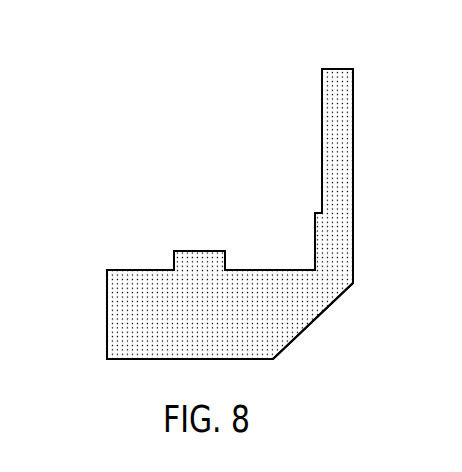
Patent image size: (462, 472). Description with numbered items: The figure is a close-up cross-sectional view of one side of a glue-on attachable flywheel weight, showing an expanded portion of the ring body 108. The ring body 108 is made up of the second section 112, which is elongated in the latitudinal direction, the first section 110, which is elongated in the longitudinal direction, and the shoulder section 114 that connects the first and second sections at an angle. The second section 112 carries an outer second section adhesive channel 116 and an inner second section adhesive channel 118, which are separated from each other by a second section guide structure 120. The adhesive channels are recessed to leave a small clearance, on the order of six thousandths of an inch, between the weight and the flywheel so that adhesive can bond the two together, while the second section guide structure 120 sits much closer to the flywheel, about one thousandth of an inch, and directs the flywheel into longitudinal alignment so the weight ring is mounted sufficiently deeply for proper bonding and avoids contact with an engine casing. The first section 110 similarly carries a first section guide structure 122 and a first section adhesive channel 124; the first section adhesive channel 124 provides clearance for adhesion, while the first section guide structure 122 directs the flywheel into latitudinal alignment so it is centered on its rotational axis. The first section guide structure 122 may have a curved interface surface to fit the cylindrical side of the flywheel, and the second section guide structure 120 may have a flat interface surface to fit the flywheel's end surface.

The ring body 108 is at (338, 69).
The first section 110 is at (353, 131).
The first section adhesive channel 124 is at (322, 130).
The first section guide structure 122 is at (315, 213).
The outer second section adhesive channel 116 is at (271, 270).
The inner second section adhesive channel 118 is at (145, 270).
The second section guide structure 120 is at (200, 251).
The shoulder section 114 is at (325, 309).
The second section 112 is at (206, 360).